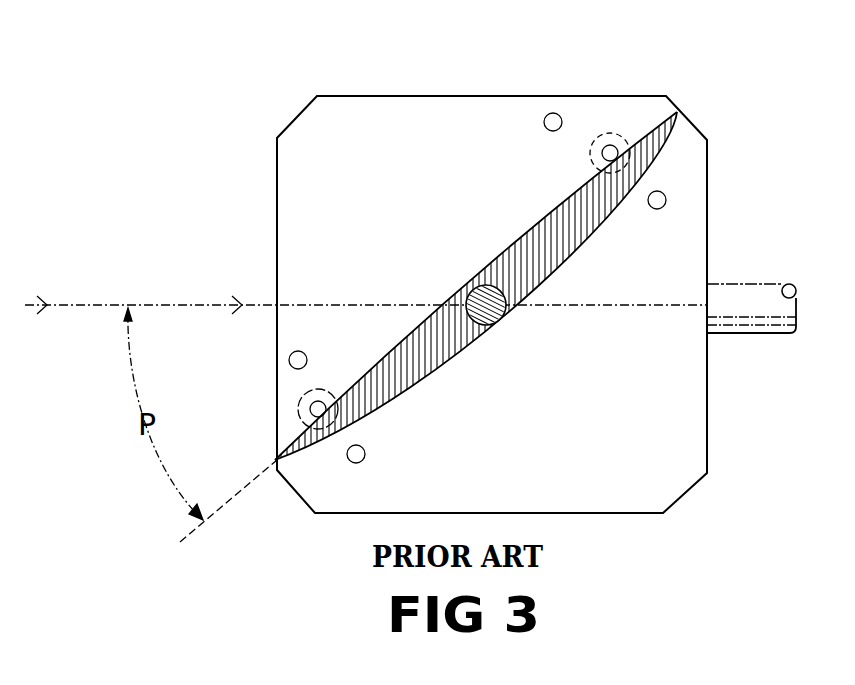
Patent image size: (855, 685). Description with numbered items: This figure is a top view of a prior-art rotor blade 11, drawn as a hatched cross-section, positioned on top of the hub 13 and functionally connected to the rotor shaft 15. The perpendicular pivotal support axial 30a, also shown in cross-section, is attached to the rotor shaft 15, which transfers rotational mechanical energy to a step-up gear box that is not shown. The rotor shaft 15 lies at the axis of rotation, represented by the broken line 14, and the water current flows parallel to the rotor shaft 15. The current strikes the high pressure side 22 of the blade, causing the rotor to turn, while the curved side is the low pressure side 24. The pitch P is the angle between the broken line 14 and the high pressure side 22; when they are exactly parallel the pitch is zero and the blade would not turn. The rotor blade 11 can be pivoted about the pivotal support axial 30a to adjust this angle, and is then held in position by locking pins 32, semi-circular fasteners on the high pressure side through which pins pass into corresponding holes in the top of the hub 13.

The rotor blade 11 is at (527, 300).
The hub 13 is at (338, 133).
The axis of rotation 14 is at (322, 296).
The rotor shaft 15 is at (755, 312).
The high pressure side 22 is at (553, 212).
The low pressure side 24 is at (653, 158).
The pivotal support axial 30a is at (475, 285).
The locking pins 32 is at (304, 394).